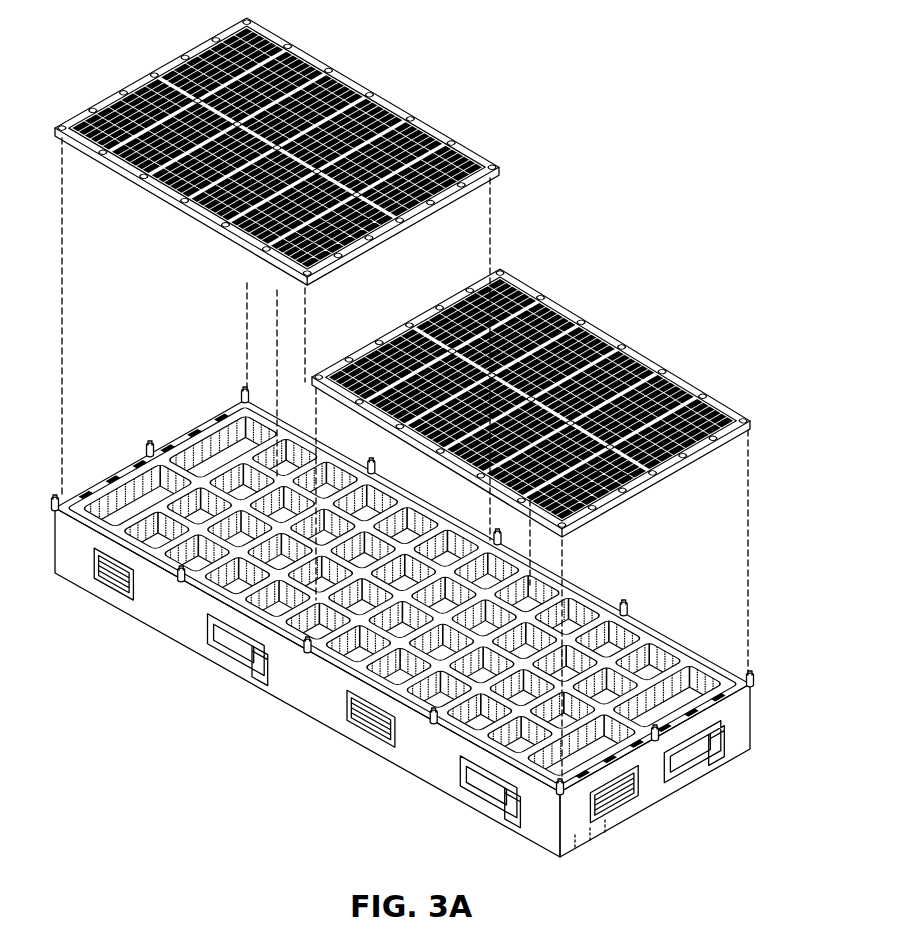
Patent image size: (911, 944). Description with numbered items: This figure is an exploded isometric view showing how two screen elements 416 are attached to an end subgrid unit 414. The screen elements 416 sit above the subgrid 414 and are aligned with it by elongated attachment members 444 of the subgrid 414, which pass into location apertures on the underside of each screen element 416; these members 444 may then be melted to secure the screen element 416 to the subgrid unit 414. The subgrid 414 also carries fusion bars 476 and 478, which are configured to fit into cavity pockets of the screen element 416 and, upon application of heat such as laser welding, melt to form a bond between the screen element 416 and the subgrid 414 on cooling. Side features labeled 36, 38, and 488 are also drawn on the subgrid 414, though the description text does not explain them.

The side wall of tray 36 is at (575, 840).
The tray body 38 is at (183, 618).
The end subgrid unit 414 is at (456, 592).
The screen element 416 is at (718, 335).
The elongated attachment member 444 is at (628, 611).
The fusion bar 476 is at (475, 757).
The fusion bar 478 is at (250, 437).
The compartment opening 488 is at (185, 548).